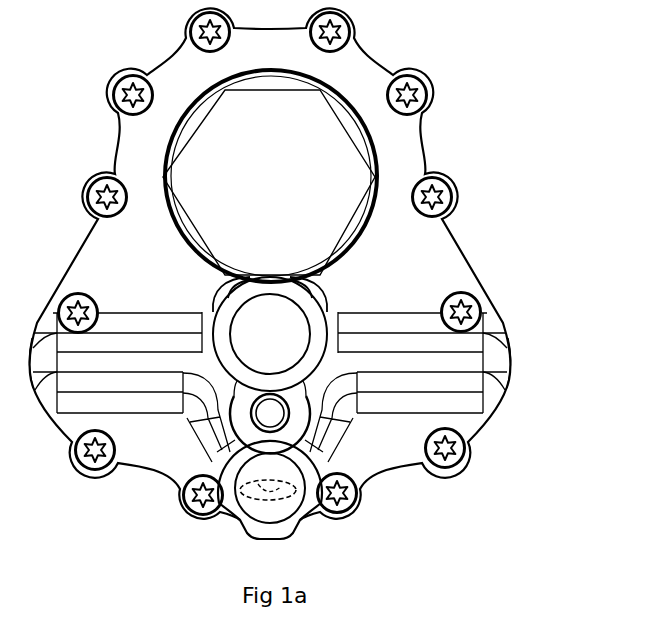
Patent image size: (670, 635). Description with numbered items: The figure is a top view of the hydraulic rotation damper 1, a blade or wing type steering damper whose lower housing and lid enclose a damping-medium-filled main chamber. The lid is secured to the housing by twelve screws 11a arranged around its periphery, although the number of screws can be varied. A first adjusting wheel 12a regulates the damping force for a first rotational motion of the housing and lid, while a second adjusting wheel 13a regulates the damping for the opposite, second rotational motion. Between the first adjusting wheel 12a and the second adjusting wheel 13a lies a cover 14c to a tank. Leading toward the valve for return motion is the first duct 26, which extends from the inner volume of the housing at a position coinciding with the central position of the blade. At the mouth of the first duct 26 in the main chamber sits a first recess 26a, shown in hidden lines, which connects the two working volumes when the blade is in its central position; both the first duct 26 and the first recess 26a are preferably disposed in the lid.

The hydraulic rotation damper 1 is at (447, 73).
The screws 11a is at (457, 195).
The first adjusting wheel 12a is at (280, 332).
The cover 14c is at (300, 418).
The second adjusting wheel 13a is at (352, 480).
The first duct 26 is at (267, 492).
The first recess 26a is at (245, 495).